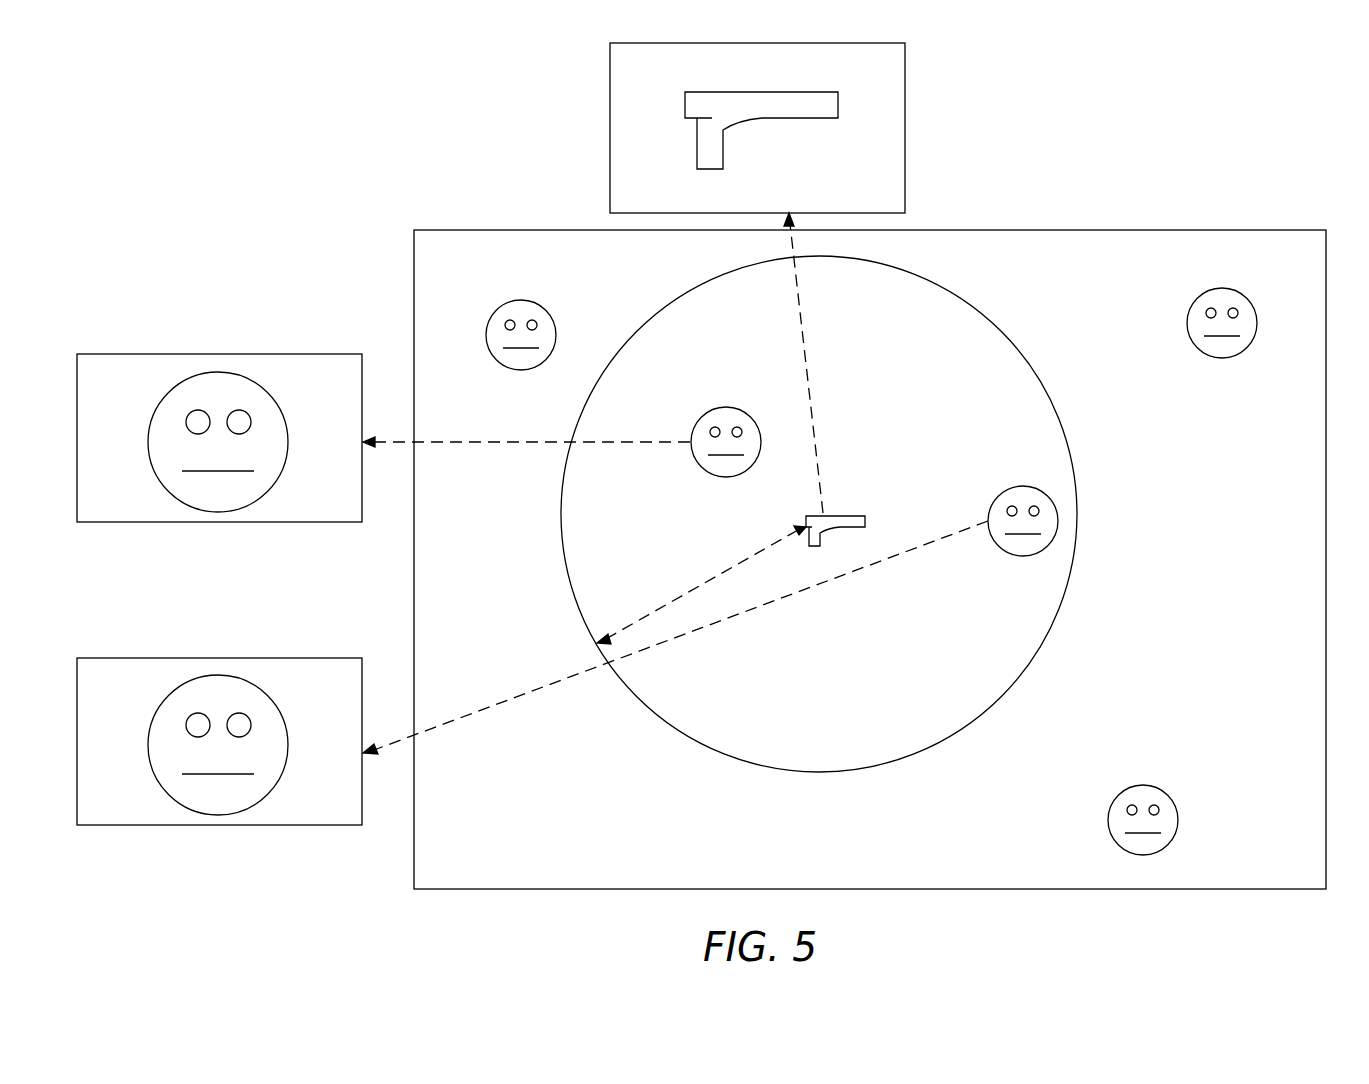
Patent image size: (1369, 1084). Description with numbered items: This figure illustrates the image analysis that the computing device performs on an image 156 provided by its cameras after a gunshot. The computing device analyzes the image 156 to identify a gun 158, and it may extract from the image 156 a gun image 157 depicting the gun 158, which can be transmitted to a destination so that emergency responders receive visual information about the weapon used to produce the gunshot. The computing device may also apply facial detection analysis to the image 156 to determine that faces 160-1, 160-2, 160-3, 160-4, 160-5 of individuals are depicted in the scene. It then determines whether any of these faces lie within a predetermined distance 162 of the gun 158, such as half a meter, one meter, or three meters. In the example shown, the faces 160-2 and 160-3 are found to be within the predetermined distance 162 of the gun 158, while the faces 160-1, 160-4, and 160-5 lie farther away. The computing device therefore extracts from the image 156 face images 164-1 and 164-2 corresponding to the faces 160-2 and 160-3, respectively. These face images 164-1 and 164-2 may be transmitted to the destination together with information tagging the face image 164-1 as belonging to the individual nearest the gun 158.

The image 156 is at (1103, 230).
The gun image 157 is at (610, 103).
The gun 158 is at (806, 516).
The face 160-1 is at (525, 300).
The face 160-2 is at (726, 406).
The face 160-3 is at (1016, 487).
The face 160-4 is at (1220, 288).
The face 160-5 is at (1137, 785).
The predetermined distance 162 is at (712, 580).
The face image 164-1 is at (283, 354).
The face image 164-2 is at (266, 658).